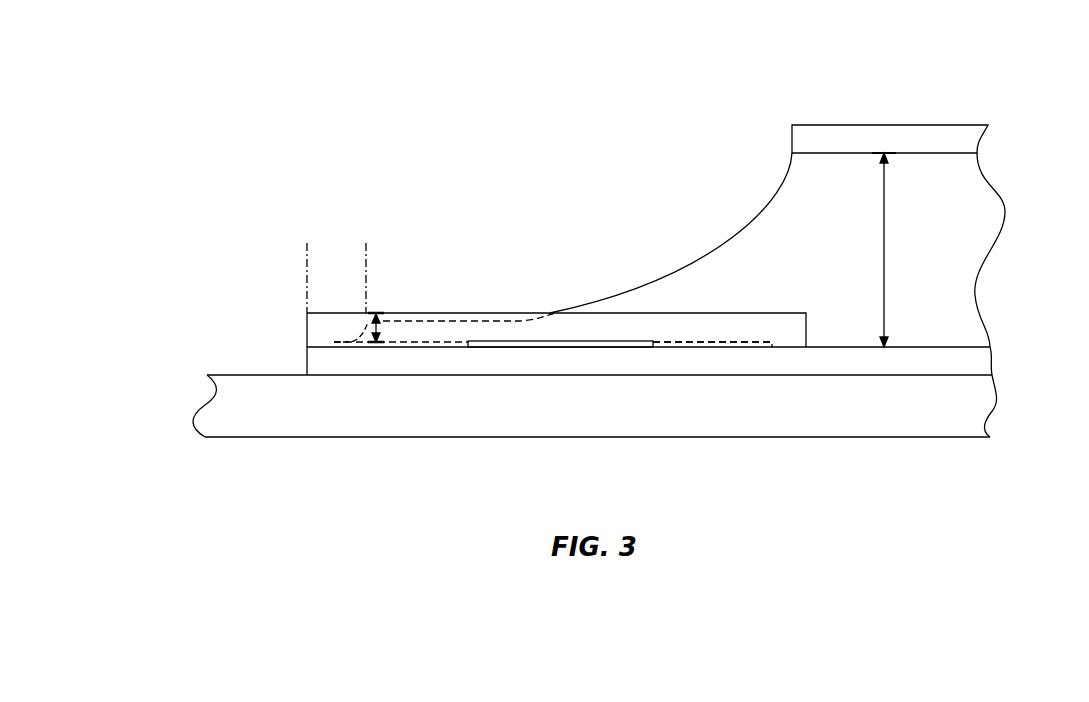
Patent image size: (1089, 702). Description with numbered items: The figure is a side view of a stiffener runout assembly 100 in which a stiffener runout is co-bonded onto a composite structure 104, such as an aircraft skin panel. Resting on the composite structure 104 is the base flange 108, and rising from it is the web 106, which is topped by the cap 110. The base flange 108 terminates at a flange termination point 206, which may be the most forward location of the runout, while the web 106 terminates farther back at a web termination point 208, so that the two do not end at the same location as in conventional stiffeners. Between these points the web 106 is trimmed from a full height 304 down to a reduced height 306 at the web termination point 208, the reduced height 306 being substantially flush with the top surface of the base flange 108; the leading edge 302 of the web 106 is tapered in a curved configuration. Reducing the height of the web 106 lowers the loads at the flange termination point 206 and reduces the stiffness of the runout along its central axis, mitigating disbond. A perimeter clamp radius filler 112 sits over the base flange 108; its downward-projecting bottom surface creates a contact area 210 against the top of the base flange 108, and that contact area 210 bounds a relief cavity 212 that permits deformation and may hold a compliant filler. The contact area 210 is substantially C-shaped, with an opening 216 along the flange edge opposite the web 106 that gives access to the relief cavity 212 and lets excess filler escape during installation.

The stiffener runout assembly 100 is at (286, 78).
The composite structure 104 is at (970, 403).
The web 106 is at (988, 240).
The base flange 108 is at (980, 368).
The cap 110 is at (952, 137).
The perimeter clamp radius filler 112 is at (788, 323).
The flange termination point 206 is at (305, 269).
The web termination point 208 is at (365, 269).
The contact area 210 is at (788, 348).
The relief cavity 212 is at (673, 343).
The opening 216 is at (536, 345).
The leading edge 302 is at (733, 245).
The full height 304 is at (894, 250).
The reduced height 306 is at (387, 327).